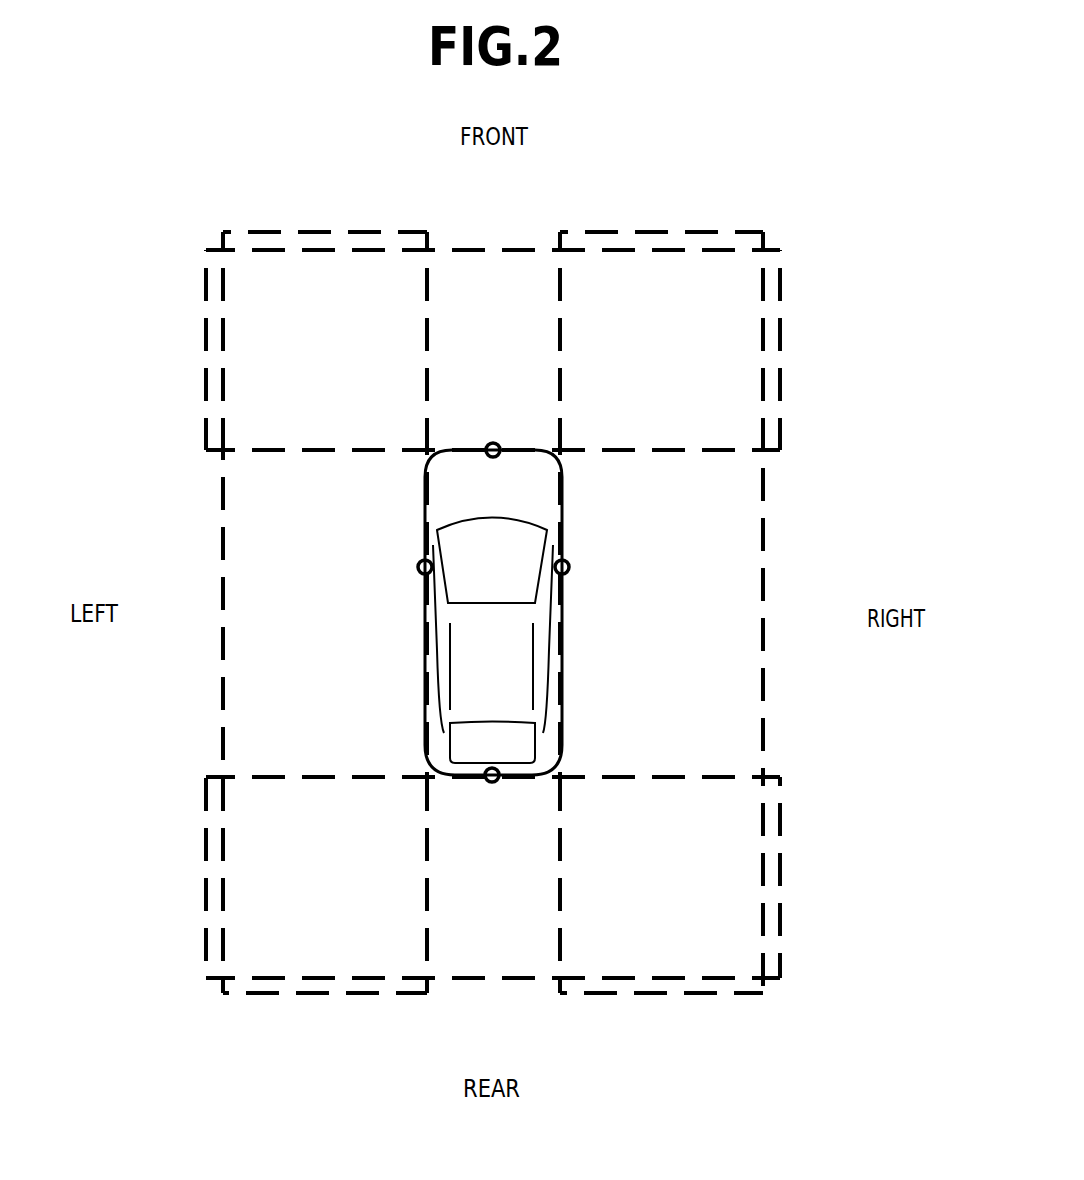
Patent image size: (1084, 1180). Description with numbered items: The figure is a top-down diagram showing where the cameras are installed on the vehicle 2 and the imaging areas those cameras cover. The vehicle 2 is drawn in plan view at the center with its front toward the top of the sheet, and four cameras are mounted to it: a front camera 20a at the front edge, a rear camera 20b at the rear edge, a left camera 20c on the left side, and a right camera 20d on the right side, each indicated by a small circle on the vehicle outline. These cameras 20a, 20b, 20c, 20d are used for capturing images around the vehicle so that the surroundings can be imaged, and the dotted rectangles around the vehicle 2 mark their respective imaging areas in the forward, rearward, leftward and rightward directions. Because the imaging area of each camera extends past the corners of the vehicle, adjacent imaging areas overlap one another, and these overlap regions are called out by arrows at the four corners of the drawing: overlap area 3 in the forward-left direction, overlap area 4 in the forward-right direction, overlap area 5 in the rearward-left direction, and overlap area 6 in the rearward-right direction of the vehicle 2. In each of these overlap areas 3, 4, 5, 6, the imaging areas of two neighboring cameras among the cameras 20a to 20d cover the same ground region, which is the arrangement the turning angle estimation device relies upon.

The vehicle 2 is at (464, 653).
The overlap area 3 is at (240, 264).
The overlap area 4 is at (750, 264).
The overlap area 5 is at (236, 963).
The overlap area 6 is at (749, 963).
The front camera 20a is at (500, 452).
The rear camera 20b is at (499, 773).
The left camera 20c is at (418, 567).
The right camera 20d is at (569, 568).